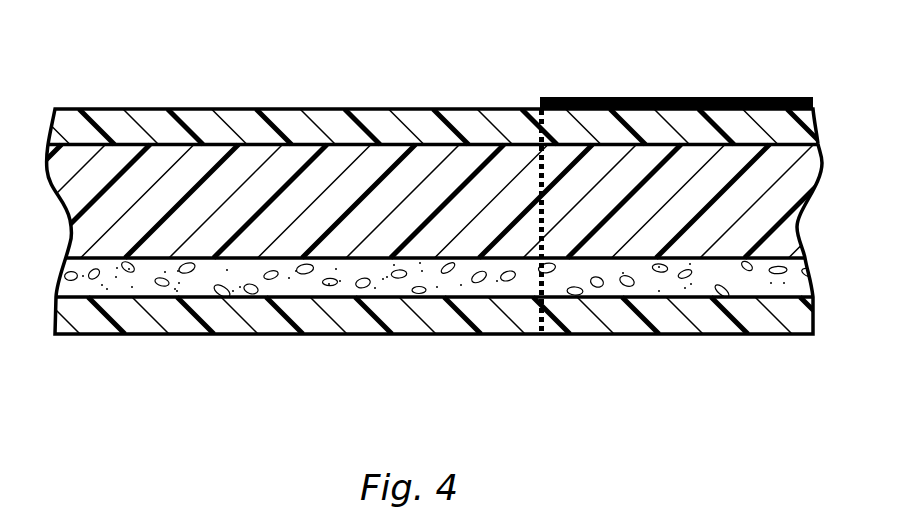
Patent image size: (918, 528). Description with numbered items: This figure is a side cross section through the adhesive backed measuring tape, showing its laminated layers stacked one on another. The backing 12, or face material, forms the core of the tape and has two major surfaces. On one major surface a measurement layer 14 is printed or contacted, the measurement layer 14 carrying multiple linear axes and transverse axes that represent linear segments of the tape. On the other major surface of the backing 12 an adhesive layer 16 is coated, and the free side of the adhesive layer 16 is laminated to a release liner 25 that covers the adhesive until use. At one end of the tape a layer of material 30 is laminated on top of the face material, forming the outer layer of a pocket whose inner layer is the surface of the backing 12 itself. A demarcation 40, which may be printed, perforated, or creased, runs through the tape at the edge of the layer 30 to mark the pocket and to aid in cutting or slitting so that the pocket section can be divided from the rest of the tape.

The backing 12 is at (177, 178).
The measurement layer 14 is at (323, 120).
The adhesive layer 16 is at (147, 283).
The release liner 25 is at (227, 323).
The outer layer of material 30 is at (577, 97).
The demarcation 40 is at (537, 320).